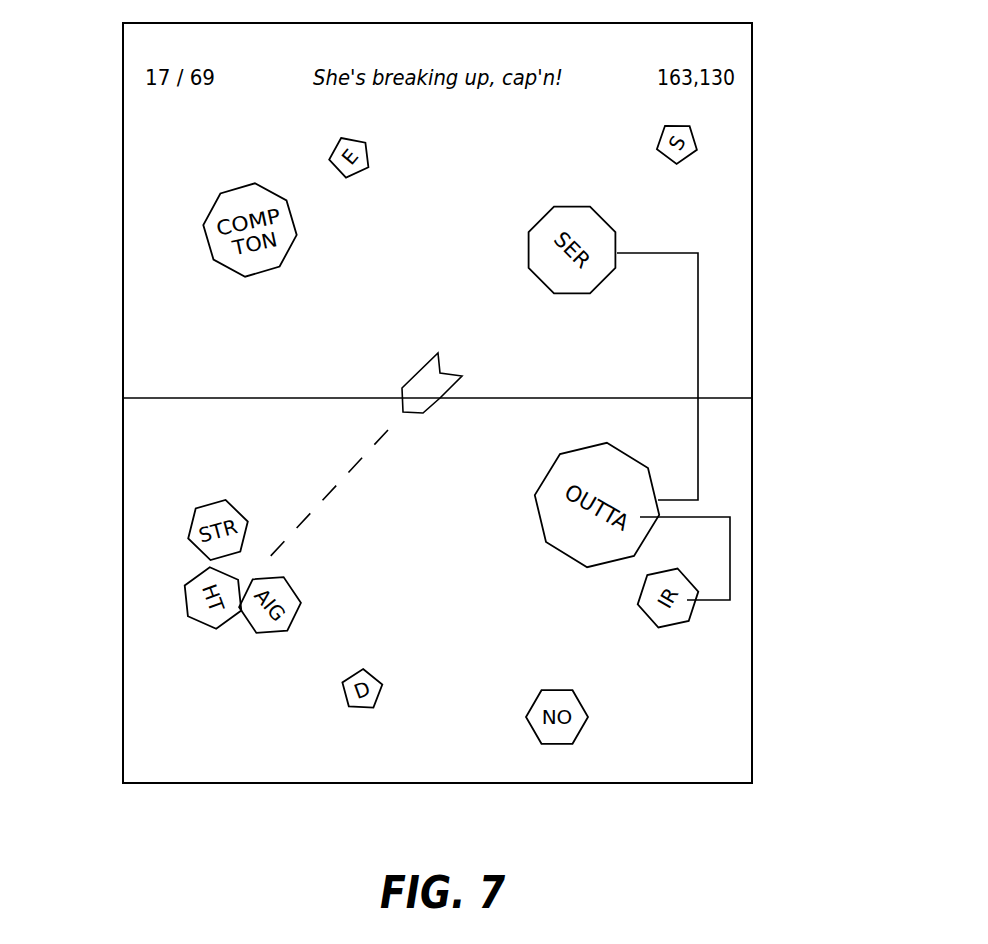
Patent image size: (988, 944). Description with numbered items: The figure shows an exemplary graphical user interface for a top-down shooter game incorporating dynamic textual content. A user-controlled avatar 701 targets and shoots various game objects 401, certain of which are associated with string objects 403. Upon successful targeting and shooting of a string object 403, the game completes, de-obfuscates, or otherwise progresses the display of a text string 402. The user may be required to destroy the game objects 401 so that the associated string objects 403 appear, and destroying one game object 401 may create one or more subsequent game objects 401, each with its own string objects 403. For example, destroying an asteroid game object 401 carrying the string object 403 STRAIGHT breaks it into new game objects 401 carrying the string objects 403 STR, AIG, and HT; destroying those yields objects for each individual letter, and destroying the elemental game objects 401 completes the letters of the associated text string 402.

The game objects 401 is at (752, 398).
The text strings 402 is at (528, 52).
The string objects 403 is at (730, 573).
The user-controlled avatar 701 is at (123, 398).